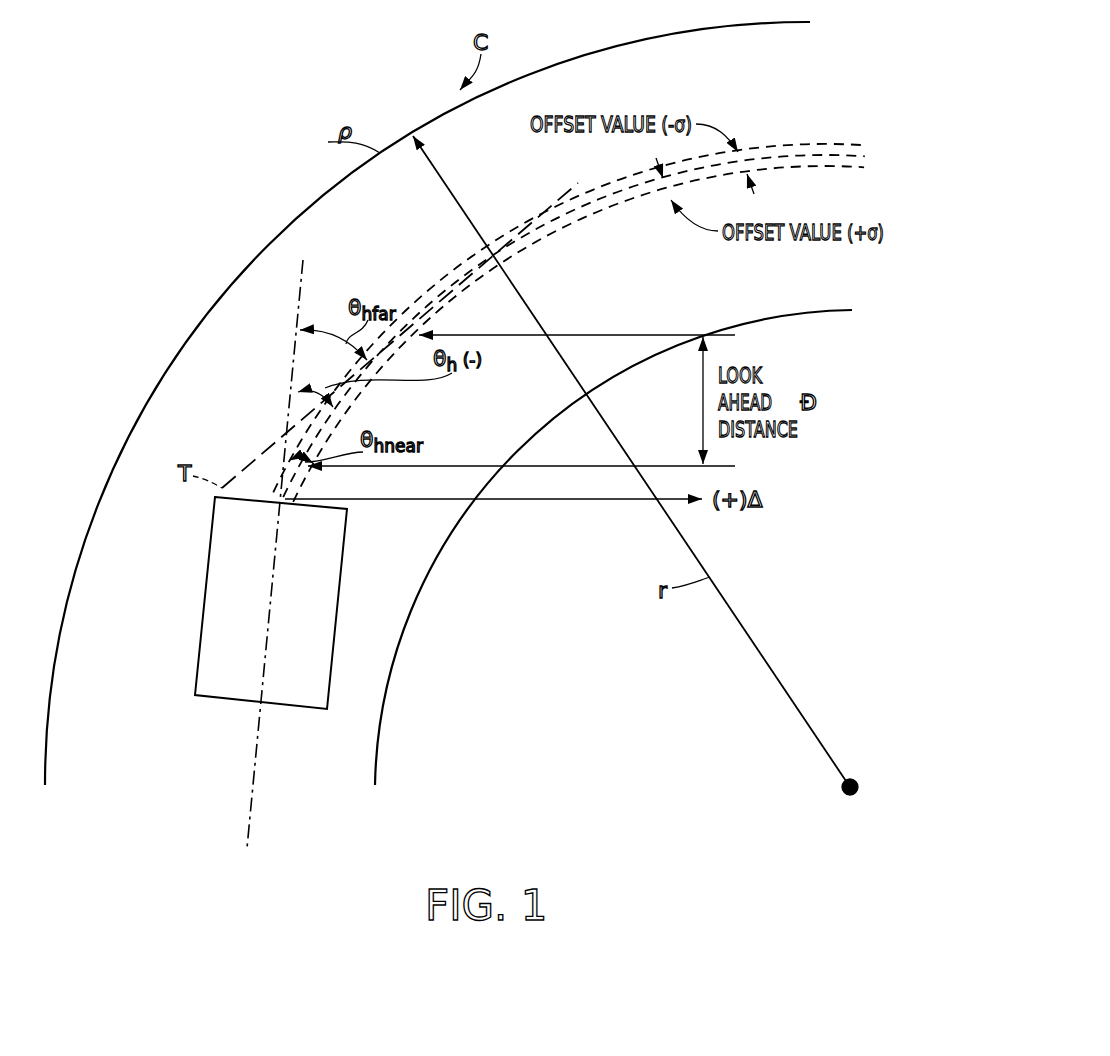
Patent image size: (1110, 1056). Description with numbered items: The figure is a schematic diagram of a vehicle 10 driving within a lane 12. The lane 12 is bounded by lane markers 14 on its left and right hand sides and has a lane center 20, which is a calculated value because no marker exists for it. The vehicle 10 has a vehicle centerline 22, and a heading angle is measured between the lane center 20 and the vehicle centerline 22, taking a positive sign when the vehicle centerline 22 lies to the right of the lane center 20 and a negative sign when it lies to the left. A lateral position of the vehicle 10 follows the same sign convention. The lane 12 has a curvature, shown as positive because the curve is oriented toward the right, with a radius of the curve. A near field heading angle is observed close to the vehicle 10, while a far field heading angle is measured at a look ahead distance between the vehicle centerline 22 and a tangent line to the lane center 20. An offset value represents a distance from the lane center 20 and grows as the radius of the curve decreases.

The vehicle 10 is at (284, 613).
The lane 12 is at (537, 204).
The lane markers 14 is at (228, 290).
The lane center 20 is at (555, 232).
The vehicle centerline 22 is at (305, 262).